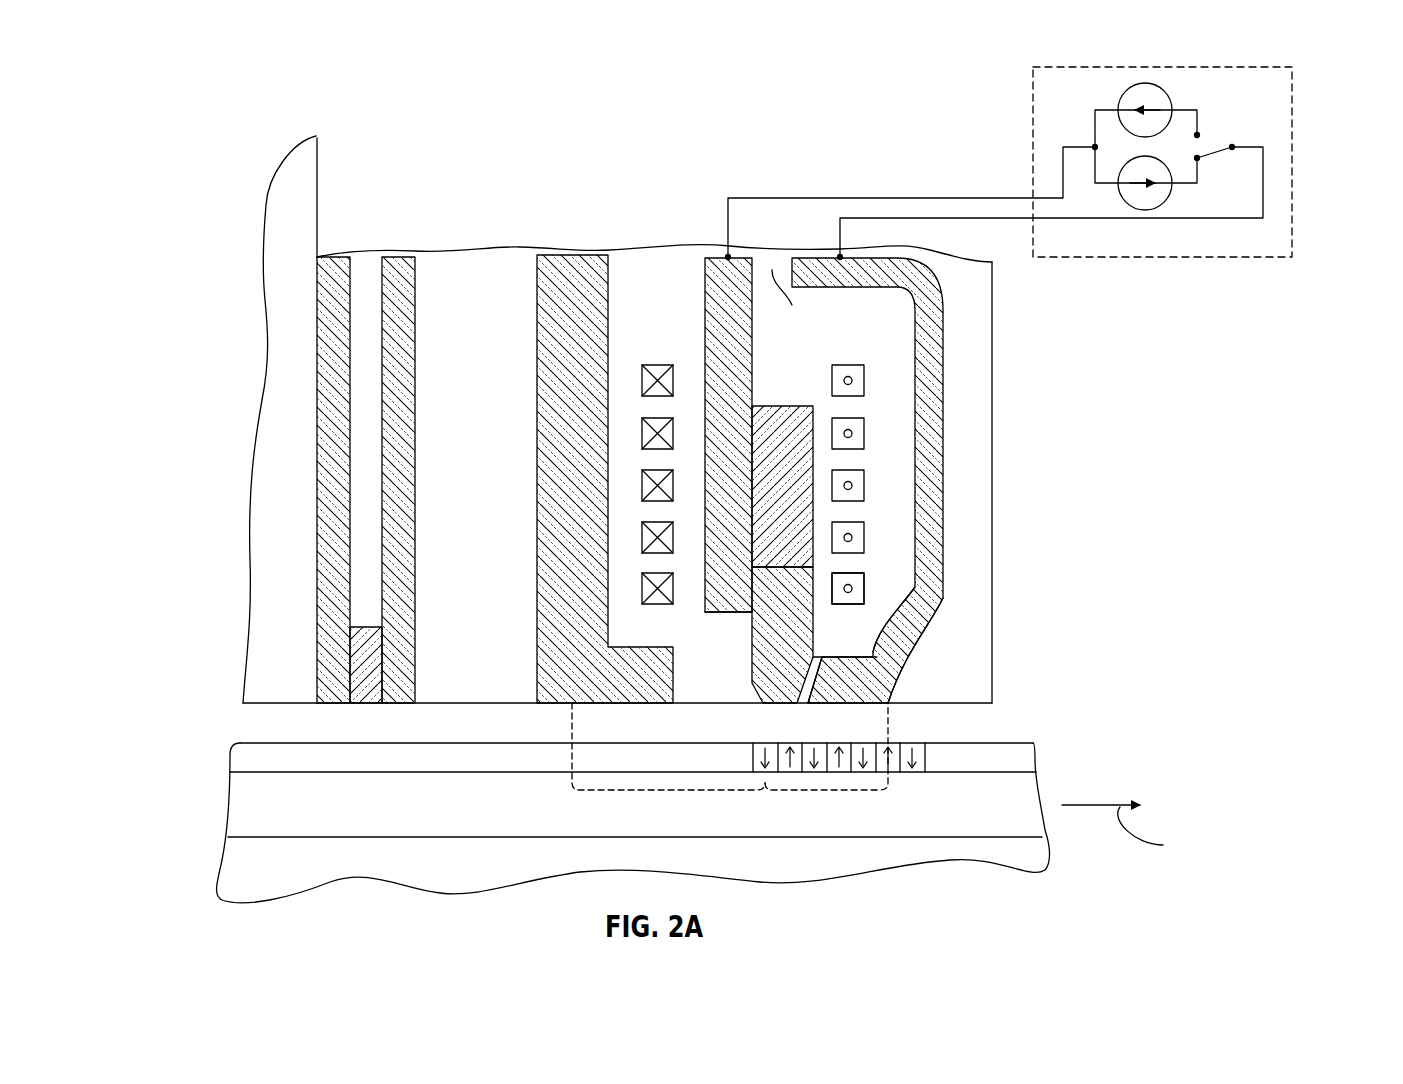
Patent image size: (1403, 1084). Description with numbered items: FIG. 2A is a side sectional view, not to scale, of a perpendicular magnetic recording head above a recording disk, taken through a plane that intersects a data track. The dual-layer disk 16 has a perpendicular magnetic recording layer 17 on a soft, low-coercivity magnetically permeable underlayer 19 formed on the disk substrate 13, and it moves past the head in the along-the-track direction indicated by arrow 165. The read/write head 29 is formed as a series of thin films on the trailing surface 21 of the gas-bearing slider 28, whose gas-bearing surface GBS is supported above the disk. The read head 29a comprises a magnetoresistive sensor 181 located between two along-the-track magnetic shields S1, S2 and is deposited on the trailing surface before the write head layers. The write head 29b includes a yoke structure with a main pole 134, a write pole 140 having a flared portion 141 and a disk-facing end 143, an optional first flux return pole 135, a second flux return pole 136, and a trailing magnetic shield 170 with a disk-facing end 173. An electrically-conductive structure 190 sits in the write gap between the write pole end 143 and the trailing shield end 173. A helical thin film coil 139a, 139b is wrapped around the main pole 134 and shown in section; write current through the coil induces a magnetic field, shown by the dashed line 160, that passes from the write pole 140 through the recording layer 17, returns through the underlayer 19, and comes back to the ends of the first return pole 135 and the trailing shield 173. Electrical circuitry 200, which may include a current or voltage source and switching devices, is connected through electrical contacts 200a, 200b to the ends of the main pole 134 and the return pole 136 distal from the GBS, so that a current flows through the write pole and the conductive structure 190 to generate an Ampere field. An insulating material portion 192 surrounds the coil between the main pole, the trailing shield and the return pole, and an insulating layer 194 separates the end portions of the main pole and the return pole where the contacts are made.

The disk substrate 13 is at (1040, 862).
The disk 16 is at (198, 860).
The recording layer 17 is at (1030, 762).
The soft underlayer 19 is at (1033, 797).
The trailing surface 21 is at (320, 170).
The slider 28 is at (267, 204).
The read/write head 29 is at (947, 133).
The read head 29a is at (413, 242).
The write head 29b is at (943, 188).
The main pole 134 is at (720, 332).
The first flux return pole 135 is at (557, 335).
The second flux return pole 136 is at (933, 523).
The write coil 139a is at (640, 607).
The write coil 139b is at (872, 603).
The write pole 140 is at (760, 405).
The flared portion 141 is at (757, 624).
The disk-facing end 143 is at (765, 785).
The magnetic field 160 is at (596, 795).
The along-the-track direction arrow 165 is at (1110, 800).
The trailing magnetic shield 170 is at (905, 645).
The disk-facing end of trailing shield 173 is at (815, 705).
The magnetoresistive read sensor 181 is at (367, 697).
The electrically-conductive structure 190 is at (818, 656).
The insulating material portion 192 is at (876, 337).
The electrically insulating material layer 194 is at (792, 305).
The electrical circuitry 200 is at (1296, 163).
The electrical contact 200a is at (726, 255).
The electrical contact 200b is at (838, 255).
The gas-bearing surface GBS is at (280, 705).
The first magnetic shield S1 is at (332, 542).
The second magnetic shield S2 is at (400, 545).